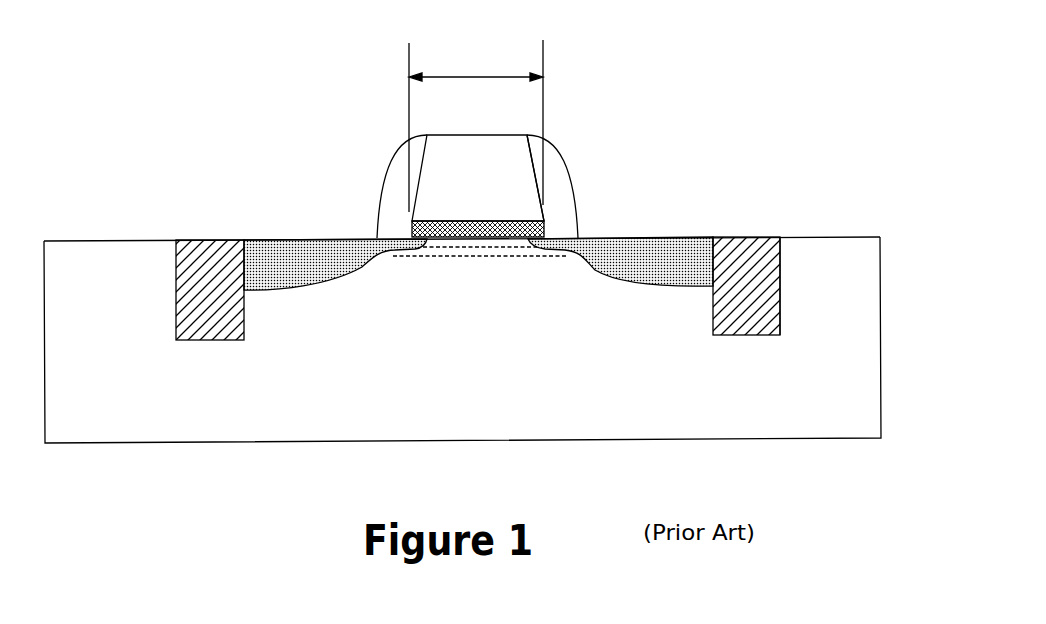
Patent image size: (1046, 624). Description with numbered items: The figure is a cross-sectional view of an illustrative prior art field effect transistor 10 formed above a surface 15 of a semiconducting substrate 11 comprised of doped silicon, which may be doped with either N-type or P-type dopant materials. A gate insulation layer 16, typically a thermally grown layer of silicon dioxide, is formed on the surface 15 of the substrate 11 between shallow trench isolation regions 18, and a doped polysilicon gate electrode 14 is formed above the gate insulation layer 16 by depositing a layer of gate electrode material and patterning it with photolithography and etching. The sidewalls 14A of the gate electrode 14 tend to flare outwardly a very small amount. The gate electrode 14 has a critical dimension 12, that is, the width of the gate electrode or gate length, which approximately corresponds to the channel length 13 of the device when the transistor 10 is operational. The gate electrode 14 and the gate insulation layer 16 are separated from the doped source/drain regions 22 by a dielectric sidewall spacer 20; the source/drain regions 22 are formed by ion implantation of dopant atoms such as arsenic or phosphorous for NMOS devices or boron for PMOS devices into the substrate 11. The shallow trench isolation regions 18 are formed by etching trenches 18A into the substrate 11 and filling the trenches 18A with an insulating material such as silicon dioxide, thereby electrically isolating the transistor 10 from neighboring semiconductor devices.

The field effect transistor 10 is at (448, 123).
The semiconducting substrate 11 is at (747, 420).
The critical dimension 12 is at (478, 77).
The channel length 13 is at (480, 255).
The gate electrode 14 is at (512, 190).
The sidewalls of the gate electrode 14A is at (543, 140).
The surface of the substrate 15 is at (838, 237).
The gate insulation layer 16 is at (544, 221).
The shallow trench isolation regions 18 is at (220, 275).
The trenches 18A is at (780, 303).
The dielectric sidewall spacer 20 is at (393, 190).
The source/drain regions 22 is at (317, 257).